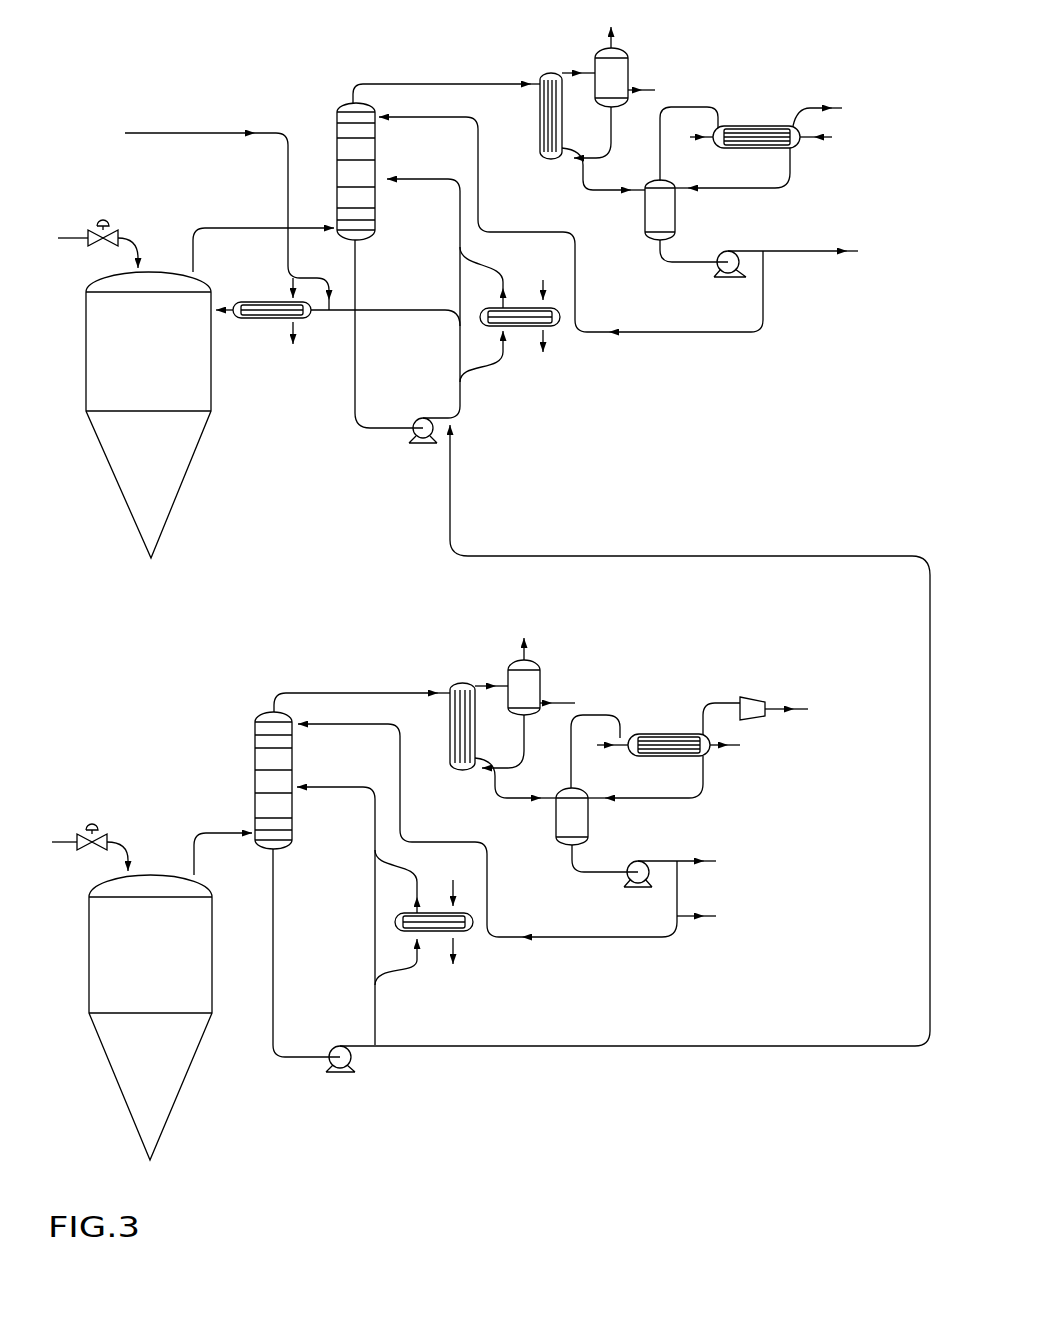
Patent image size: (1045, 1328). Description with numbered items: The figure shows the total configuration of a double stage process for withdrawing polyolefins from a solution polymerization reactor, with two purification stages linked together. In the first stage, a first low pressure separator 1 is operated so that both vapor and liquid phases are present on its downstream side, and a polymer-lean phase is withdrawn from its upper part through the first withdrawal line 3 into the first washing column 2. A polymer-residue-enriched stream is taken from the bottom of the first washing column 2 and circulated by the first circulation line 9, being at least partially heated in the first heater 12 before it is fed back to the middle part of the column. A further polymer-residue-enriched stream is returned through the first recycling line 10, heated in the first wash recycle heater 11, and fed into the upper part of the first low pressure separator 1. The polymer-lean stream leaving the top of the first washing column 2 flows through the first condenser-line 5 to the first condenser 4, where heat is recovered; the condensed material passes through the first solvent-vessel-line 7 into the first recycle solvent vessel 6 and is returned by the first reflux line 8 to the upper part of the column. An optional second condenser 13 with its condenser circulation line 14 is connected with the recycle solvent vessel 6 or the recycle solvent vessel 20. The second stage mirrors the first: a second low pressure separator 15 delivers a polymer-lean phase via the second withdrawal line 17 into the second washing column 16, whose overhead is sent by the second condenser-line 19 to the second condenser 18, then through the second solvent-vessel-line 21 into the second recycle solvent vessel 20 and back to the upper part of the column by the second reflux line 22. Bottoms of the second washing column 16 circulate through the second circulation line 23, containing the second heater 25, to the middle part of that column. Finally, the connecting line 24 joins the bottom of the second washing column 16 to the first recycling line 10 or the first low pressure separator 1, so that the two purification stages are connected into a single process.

The first low pressure separator 1 is at (86, 370).
The first washing column 2 is at (337, 138).
The first withdrawal line 3 is at (245, 226).
The first condenser 4 is at (545, 73).
The first condenser-line 5 is at (448, 84).
The first recycle solvent vessel 6 is at (645, 215).
The first solvent-vessel-line 7 is at (583, 178).
The first reflux line 8 is at (680, 333).
The first circulation line 9 is at (458, 217).
The first recycling line 10 is at (352, 393).
The first wash recycle heater 11 is at (262, 320).
The first heater 12 is at (558, 326).
The second condenser 13 is at (745, 126).
The condenser circulation line 14 is at (675, 107).
The second low pressure separator 15 is at (89, 975).
The second washing column 16 is at (256, 760).
The second withdrawal line 17 is at (207, 835).
The second condenser 18 is at (460, 683).
The second condenser-line 19 is at (345, 690).
The second recycle solvent vessel 20 is at (556, 815).
The second solvent-vessel-line 21 is at (493, 783).
The second reflux line 22 is at (600, 940).
The second circulation line 23 is at (370, 845).
The connecting line 24 is at (558, 1047).
The second heater 25 is at (473, 925).